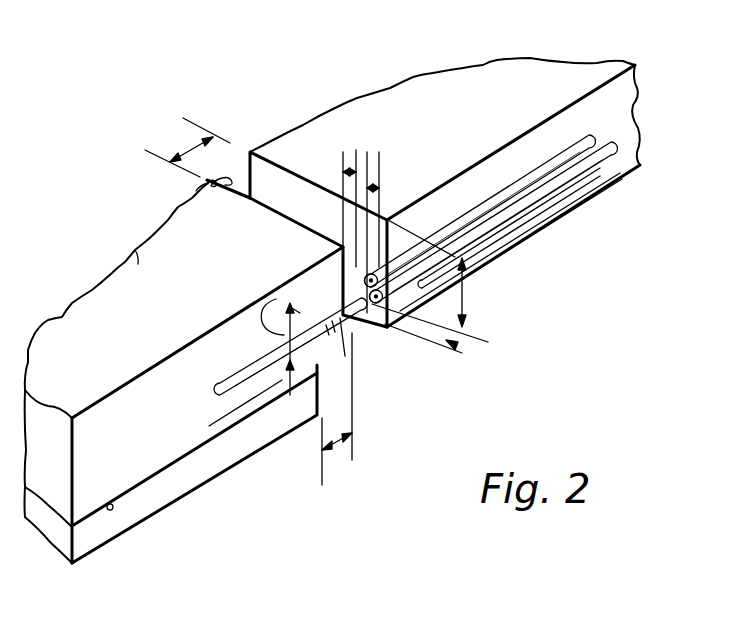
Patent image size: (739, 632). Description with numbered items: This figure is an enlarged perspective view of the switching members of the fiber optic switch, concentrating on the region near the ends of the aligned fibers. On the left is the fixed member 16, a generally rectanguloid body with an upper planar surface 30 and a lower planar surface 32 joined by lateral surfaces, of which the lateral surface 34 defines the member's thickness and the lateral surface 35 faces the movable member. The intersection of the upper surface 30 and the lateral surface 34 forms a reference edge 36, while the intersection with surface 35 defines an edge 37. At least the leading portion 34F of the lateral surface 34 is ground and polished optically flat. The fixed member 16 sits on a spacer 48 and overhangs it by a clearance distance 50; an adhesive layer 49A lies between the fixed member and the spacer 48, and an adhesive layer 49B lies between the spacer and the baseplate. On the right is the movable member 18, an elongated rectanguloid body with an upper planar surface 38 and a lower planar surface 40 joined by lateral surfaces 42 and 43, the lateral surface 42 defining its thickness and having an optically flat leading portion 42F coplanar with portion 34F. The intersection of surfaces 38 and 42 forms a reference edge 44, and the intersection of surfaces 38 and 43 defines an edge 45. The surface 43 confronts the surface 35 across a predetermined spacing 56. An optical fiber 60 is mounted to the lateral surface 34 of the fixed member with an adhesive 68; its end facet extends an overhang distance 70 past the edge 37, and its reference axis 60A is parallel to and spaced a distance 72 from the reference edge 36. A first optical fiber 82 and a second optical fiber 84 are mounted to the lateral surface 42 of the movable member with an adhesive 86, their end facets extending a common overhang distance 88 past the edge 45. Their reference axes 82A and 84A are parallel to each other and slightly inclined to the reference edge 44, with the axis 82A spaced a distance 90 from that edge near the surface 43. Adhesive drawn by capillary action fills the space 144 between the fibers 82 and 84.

The fixed member 16 is at (135, 250).
The movable member 18 is at (508, 73).
The upper planar surface 30 is at (118, 326).
The lower planar surface 32 is at (127, 487).
The lateral surface 34 is at (272, 400).
The leading portion of lateral surface 34F is at (150, 457).
The lateral surface 35 is at (354, 328).
The reference edge 36 is at (240, 318).
The edge 37 is at (196, 191).
The upper planar surface 38 is at (448, 107).
The lower planar surface 40 is at (662, 209).
The lateral surface 42 is at (620, 108).
The leading portion of lateral surface 42F is at (515, 284).
The lateral surface 43 is at (247, 180).
The reference edge 44 is at (556, 112).
The edge 45 is at (277, 165).
The spacer 48 is at (107, 528).
The adhesive layer 49A is at (187, 460).
The adhesive layer 49B is at (88, 560).
The clearance distance 50 is at (352, 458).
The spacing distance 56 is at (190, 150).
The optical fiber 60 is at (218, 384).
The reference axis 60A is at (240, 420).
The adhesive 68 is at (345, 358).
The overhang distance 70 is at (343, 158).
The spacing distance 72 is at (276, 299).
The first optical fiber 82 is at (473, 203).
The reference axis 82A is at (487, 253).
The second optical fiber 84 is at (612, 188).
The reference axis 84A is at (525, 207).
The adhesive 86 is at (421, 283).
The overhang distance 88 is at (371, 178).
The spacing distance 90 is at (476, 292).
The space between fibers 144 is at (465, 349).